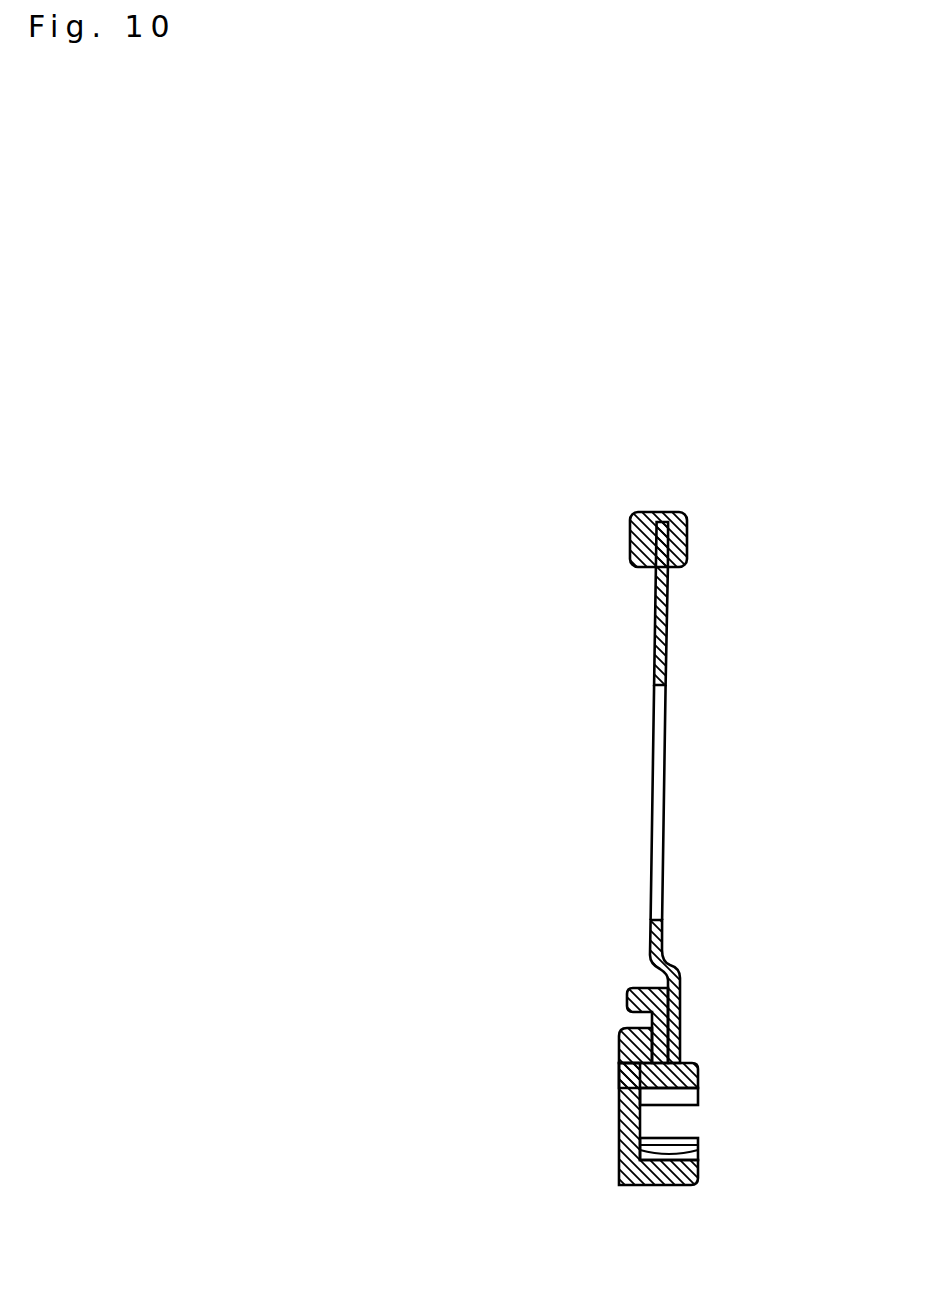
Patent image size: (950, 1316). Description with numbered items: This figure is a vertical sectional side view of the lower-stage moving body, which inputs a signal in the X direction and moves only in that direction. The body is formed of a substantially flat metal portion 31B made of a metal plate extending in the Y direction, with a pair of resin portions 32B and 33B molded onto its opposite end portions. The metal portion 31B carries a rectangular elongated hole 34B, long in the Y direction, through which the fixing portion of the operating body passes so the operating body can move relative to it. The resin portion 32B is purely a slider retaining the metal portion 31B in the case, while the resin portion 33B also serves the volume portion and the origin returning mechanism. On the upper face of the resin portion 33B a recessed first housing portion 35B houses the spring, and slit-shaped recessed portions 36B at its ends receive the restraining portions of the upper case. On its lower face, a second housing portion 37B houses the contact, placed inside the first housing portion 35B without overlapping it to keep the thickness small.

The resin portion 32B is at (647, 510).
The metal portion 31B is at (668, 630).
The elongated hole 34B is at (652, 802).
The second housing portion 37B is at (620, 1042).
The resin portion 33B is at (645, 1190).
The recessed portion 36B is at (678, 1122).
The first housing portion 35B is at (697, 1146).